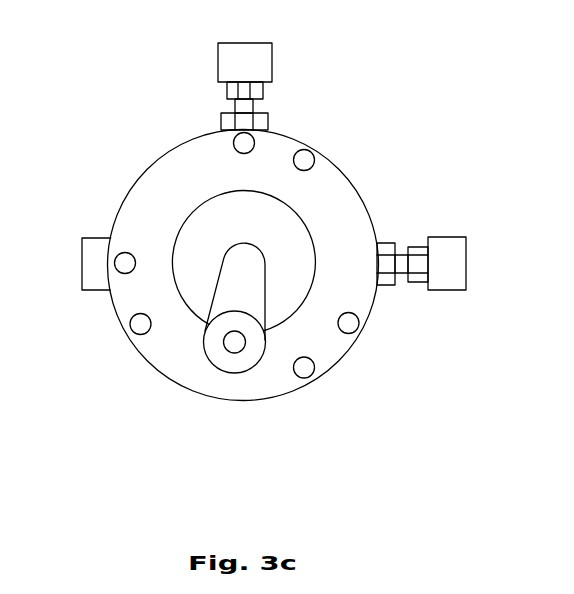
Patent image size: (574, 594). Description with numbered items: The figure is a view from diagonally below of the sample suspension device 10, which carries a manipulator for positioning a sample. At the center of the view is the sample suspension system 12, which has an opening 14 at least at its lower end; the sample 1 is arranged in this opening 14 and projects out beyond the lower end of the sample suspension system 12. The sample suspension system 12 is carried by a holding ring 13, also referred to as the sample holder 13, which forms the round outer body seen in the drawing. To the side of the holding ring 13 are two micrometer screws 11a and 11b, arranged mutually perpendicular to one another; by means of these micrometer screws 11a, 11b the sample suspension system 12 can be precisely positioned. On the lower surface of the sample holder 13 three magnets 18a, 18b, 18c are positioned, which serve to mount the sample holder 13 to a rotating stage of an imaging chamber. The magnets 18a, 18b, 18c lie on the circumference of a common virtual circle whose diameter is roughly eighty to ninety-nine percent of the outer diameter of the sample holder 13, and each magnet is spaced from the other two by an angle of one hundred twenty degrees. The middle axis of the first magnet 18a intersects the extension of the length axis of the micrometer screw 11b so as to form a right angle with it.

The sample 1 is at (249, 359).
The sample suspension device 10 is at (407, 133).
The micrometer screw 11a is at (447, 277).
The micrometer screw 11b is at (257, 62).
The sample suspension system 12 is at (230, 277).
The holding ring (sample holder) 13 is at (167, 355).
The opening 14 is at (228, 343).
The magnet 18a is at (243, 146).
The magnet 18b is at (348, 323).
The magnet 18c is at (140, 325).